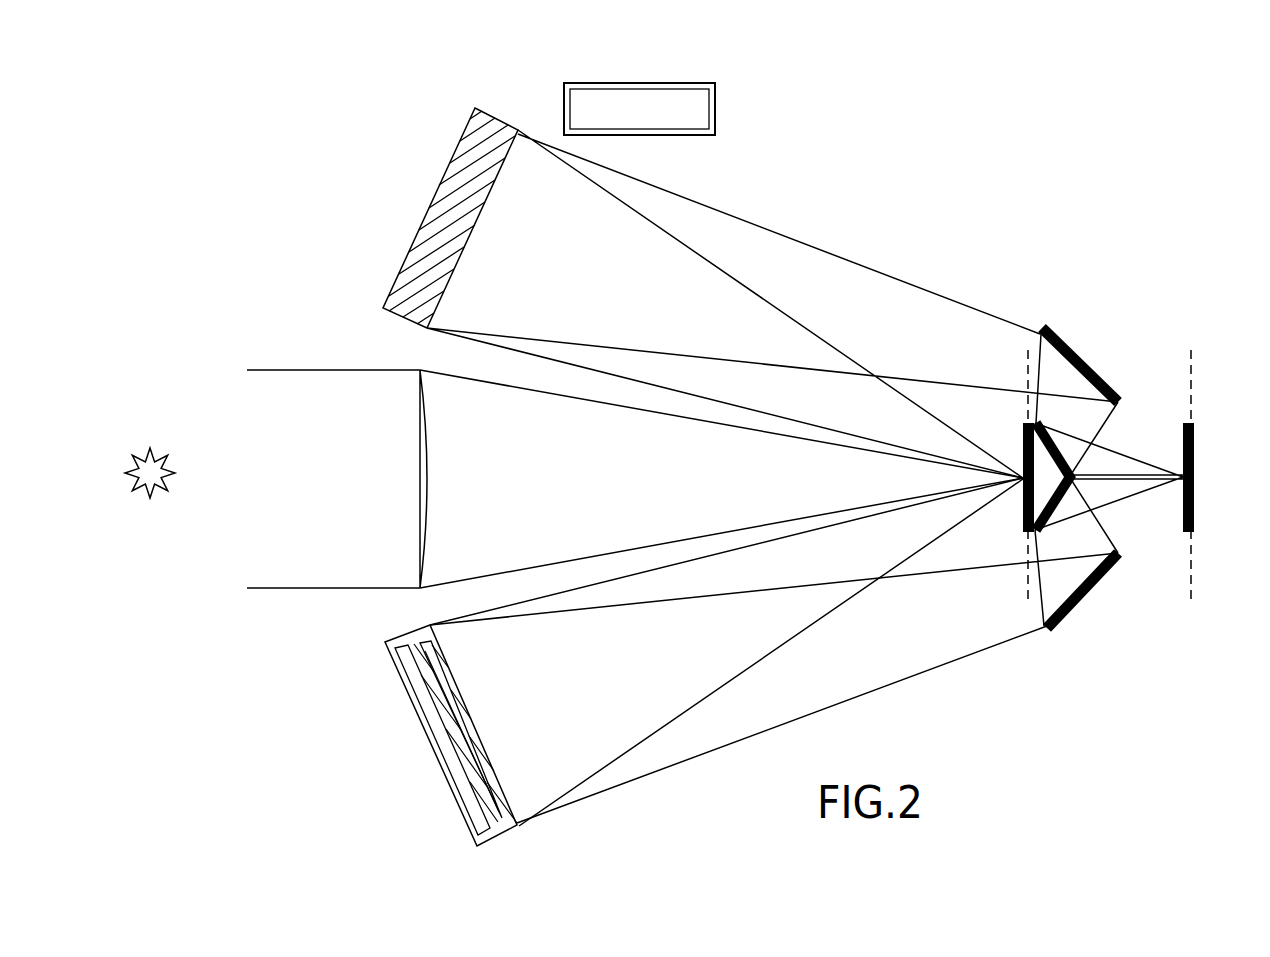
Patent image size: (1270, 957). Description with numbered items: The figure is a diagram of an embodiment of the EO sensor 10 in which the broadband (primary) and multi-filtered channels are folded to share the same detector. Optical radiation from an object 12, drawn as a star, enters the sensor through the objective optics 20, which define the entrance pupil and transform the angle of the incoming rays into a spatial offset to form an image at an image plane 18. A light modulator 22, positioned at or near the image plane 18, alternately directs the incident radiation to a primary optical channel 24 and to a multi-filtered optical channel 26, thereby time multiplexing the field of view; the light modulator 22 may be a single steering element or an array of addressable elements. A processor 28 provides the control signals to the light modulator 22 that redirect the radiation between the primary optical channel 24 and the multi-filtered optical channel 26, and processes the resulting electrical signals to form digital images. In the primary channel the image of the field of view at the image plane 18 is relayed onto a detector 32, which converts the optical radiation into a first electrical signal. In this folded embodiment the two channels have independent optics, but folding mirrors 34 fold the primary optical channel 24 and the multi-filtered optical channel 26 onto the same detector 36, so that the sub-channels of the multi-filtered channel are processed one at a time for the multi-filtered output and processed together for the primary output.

The EO sensor 10 is at (1090, 164).
The object 12 is at (143, 452).
The image plane 18 is at (263, 369).
The objective optics 20 is at (418, 530).
The light modulator 22 is at (1054, 444).
The primary optical channel 24 is at (403, 774).
The multi-filtered optical channel 26 is at (388, 185).
The processor 28 is at (716, 108).
The detector 32 is at (1028, 352).
The folding mirrors 34 is at (1106, 328).
The detector 36 is at (1206, 516).